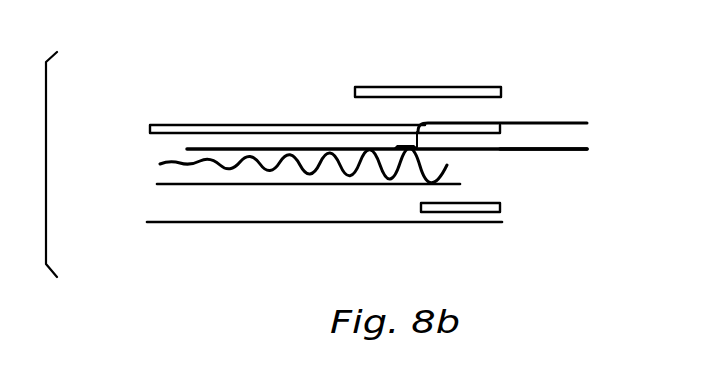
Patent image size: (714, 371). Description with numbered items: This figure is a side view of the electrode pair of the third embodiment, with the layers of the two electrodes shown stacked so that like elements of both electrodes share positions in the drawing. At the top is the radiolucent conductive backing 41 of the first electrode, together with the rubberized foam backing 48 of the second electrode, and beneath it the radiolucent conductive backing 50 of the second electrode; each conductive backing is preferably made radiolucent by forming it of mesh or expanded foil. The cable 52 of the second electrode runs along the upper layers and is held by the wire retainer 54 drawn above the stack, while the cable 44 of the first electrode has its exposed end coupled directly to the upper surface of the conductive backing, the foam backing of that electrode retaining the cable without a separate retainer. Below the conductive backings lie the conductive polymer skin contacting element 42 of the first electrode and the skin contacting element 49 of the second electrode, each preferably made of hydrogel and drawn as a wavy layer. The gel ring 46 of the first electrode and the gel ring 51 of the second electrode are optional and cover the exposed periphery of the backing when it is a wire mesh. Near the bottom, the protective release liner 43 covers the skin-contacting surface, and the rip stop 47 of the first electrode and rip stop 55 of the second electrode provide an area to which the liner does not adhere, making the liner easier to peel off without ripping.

The radiolucent conductive backing 41 is at (289, 101).
The rubberized foam backing 48 is at (149, 124).
The radiolucent conductive backing 50 is at (187, 149).
The cable 52 is at (540, 123).
The conductive polymer skin contacting element 42 is at (254, 165).
The conductive polymer skin contacting element 49 is at (160, 164).
The gel ring 46 is at (157, 184).
The protective release liner 43 is at (290, 239).
The gel ring 51 is at (160, 222).
The wire retainer 54 is at (367, 87).
The cable 44 is at (512, 150).
The rip stop 47 is at (510, 233).
The rip stop 55 is at (500, 210).